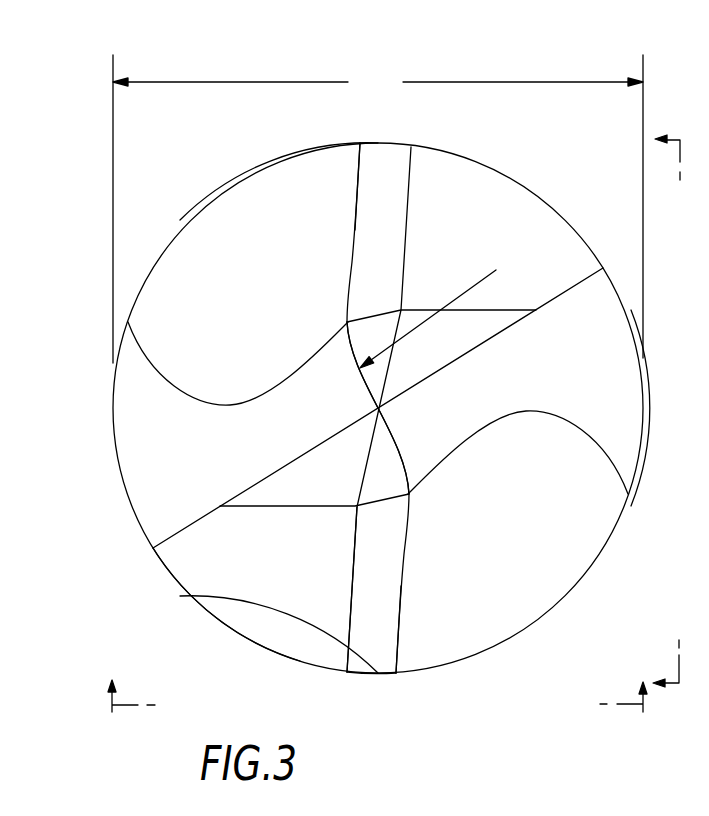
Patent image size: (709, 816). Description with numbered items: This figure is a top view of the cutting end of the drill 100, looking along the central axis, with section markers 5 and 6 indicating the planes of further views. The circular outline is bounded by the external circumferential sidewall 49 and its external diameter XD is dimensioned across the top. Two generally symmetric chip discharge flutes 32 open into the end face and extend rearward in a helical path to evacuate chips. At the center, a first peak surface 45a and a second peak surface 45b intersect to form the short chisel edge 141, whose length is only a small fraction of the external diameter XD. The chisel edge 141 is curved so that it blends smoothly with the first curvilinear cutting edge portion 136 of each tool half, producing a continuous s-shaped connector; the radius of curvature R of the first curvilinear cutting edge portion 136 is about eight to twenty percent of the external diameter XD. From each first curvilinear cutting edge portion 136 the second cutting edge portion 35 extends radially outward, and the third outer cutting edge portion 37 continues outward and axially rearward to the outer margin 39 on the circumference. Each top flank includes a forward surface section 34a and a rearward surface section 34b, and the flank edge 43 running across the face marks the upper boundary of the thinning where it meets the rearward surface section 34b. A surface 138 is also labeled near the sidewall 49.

The drill 100 is at (172, 187).
The chip discharge flute 32 is at (268, 188).
The third outer cutting edge portion 37 is at (360, 158).
The second cutting edge portion 35 is at (362, 215).
The chisel edge 141 is at (380, 380).
The first curvilinear cutting edge portion 136 is at (362, 380).
The second peak surface 45b is at (375, 327).
The first peak surface 45a is at (380, 477).
The flank edge 43 is at (273, 475).
The radius of curvature R is at (495, 273).
The outer surface 138 is at (608, 362).
The sidewall 49 is at (628, 427).
The forward surface section 34a is at (360, 592).
The rearward surface section 34b is at (232, 610).
The outer margin 39 is at (377, 673).
The external diameter XD is at (378, 209).
The section line 5- 5 is at (379, 719).
The section line 6- 6 is at (681, 413).